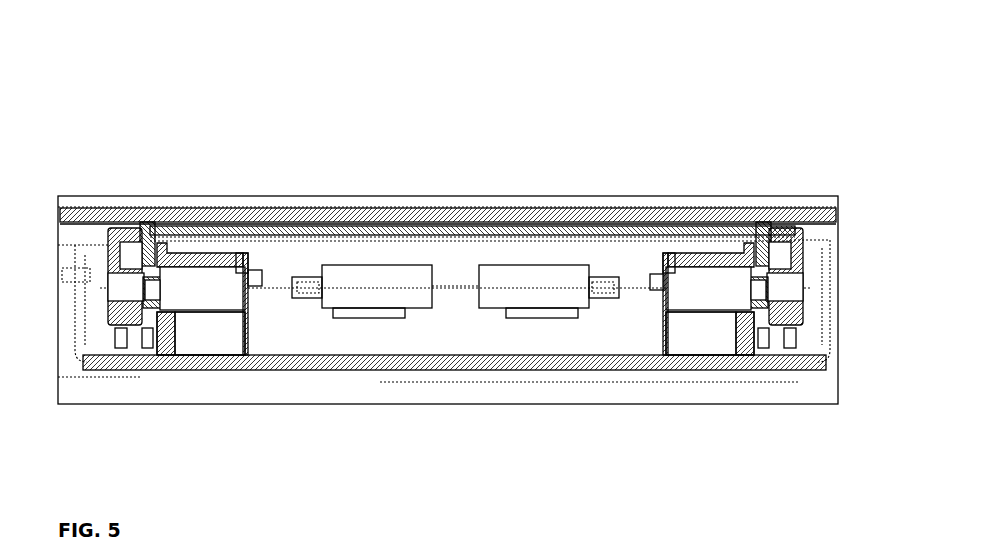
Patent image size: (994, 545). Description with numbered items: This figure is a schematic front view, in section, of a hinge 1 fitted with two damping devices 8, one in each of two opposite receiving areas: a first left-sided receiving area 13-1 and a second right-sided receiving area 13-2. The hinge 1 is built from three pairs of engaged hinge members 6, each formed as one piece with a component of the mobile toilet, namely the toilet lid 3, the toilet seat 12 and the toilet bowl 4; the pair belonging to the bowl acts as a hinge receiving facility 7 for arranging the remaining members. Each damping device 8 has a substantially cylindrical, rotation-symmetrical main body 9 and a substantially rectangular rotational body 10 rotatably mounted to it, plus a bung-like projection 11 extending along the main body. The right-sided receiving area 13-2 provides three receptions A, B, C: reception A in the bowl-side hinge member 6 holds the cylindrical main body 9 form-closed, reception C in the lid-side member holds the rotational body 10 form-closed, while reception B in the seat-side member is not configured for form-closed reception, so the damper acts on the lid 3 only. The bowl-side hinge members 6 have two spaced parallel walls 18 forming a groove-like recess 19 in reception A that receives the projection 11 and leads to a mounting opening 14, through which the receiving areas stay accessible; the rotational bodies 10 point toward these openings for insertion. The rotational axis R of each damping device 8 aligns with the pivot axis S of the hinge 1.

The hinge 1 is at (437, 150).
The toilet lid 3 is at (115, 235).
The toilet bowl 4 is at (807, 362).
The hinge members 6 is at (118, 248).
The hinge receiving facility 7 is at (160, 333).
The damping device 8 is at (407, 336).
The cylindrical main body 9 is at (377, 296).
The rotational body 10 is at (307, 290).
The bung-like projection 11 is at (343, 312).
The toilet seat 12 is at (243, 236).
The first receiving area 13-1 is at (243, 259).
The second receiving area 13-2 is at (643, 266).
The mounting openings 14 is at (266, 277).
The parallel walls 18 is at (218, 333).
The groove-like recess 19 is at (233, 337).
The reception A is at (187, 306).
The reception B is at (150, 304).
The reception C is at (122, 304).
The pivot axis S is at (455, 304).
The rotational axis R is at (455, 298).